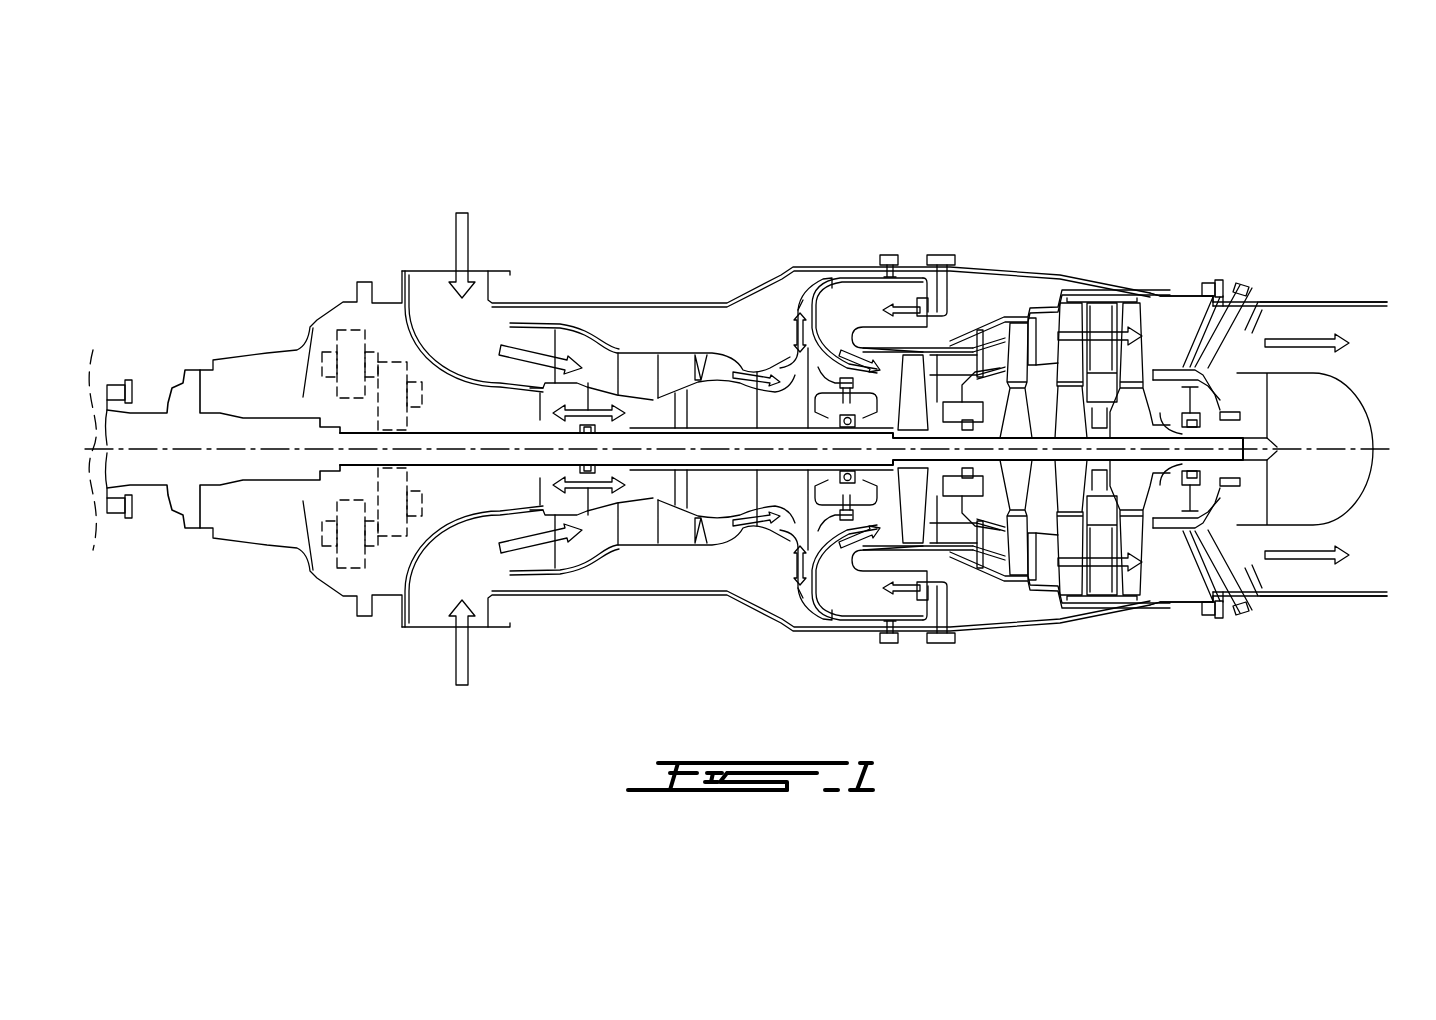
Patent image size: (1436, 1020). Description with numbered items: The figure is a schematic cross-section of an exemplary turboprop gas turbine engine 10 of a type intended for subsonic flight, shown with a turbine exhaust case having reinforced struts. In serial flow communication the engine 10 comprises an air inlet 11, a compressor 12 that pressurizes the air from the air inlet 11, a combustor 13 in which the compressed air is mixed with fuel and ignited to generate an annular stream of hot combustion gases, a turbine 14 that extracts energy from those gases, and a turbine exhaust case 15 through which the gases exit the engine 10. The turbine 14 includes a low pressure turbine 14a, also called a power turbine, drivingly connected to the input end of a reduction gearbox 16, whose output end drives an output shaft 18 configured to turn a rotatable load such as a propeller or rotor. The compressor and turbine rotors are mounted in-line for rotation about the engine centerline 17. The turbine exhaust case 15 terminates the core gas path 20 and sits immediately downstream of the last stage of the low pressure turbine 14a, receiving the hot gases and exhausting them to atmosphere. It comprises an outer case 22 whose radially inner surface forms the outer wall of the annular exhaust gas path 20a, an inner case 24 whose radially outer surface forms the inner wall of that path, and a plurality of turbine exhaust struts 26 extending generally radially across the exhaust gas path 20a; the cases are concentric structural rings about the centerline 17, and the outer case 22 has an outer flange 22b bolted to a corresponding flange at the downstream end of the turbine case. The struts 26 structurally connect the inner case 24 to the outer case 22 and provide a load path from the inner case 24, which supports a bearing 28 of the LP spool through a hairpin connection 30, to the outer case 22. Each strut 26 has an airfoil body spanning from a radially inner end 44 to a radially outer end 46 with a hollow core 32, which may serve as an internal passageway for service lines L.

The engine 10 is at (270, 201).
The air inlet 11 is at (437, 287).
The compressor 12 is at (619, 573).
The combustor 13 is at (865, 607).
The turbine 14 is at (1032, 600).
The low pressure turbine 14a is at (1070, 578).
The turbine exhaust case 15 is at (1282, 582).
The reduction gearbox 16 is at (347, 580).
The engine centerline 17 is at (79, 436).
The output shaft 18 is at (148, 468).
The core gas path 20 is at (637, 532).
The annular exhaust gas path 20a is at (1160, 325).
The outer case 22 is at (1323, 297).
The outer flange 22b is at (1213, 287).
The inner case 24 is at (1183, 578).
The turbine exhaust struts 26 is at (1262, 320).
The bearing 28 is at (1200, 422).
The hairpin connection 30 is at (1167, 600).
The hollow core 32 is at (1225, 578).
The radially inner end 44 is at (1190, 365).
The radially outer end 46 is at (1253, 330).
The service lines L is at (1240, 612).